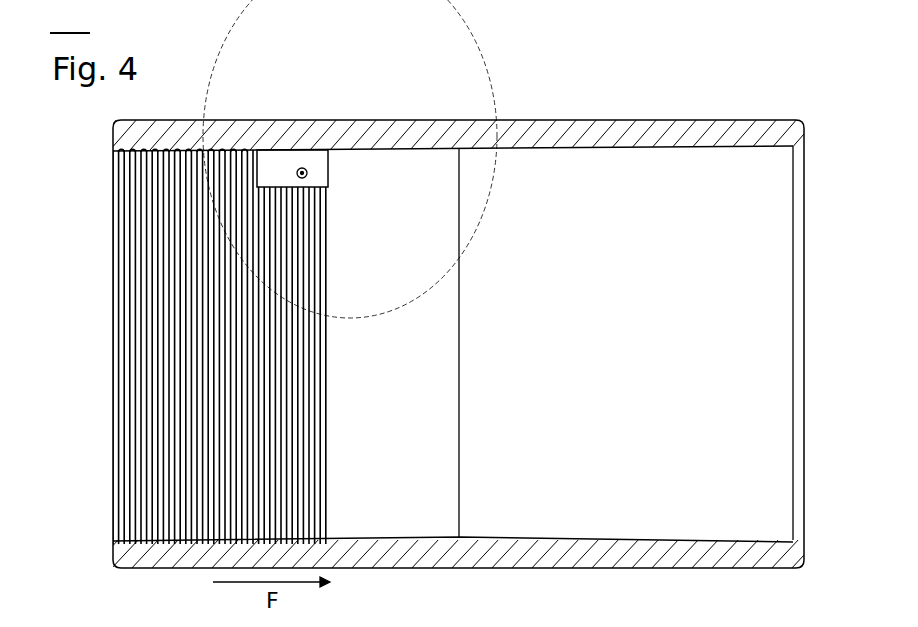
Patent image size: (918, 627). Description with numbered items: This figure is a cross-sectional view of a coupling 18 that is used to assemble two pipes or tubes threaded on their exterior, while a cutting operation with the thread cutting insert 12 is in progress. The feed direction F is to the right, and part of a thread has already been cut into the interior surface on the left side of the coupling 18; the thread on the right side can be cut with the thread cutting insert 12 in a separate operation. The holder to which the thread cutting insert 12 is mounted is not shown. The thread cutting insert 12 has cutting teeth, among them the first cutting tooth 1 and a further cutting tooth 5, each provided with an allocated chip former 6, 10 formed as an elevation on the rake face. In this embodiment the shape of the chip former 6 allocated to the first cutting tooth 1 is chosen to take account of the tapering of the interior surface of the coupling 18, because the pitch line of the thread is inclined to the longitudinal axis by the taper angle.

The first cutting tooth 1 is at (455, 304).
The cutting tooth 5 is at (221, 292).
The chip former 6 is at (318, 148).
The chip former 10 is at (260, 144).
The thread cutting insert 12 is at (321, 193).
The coupling 18 is at (455, 304).